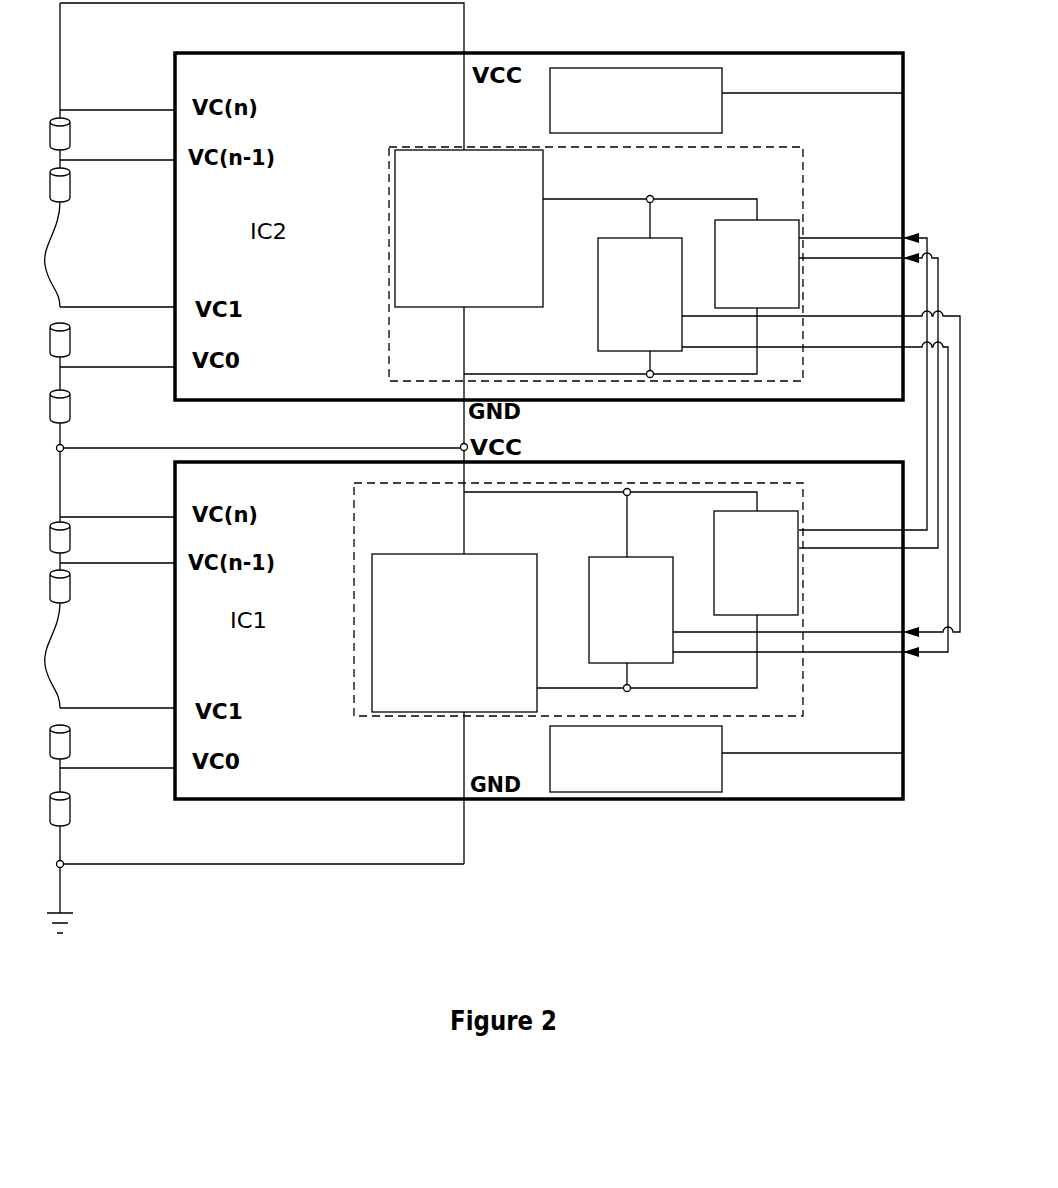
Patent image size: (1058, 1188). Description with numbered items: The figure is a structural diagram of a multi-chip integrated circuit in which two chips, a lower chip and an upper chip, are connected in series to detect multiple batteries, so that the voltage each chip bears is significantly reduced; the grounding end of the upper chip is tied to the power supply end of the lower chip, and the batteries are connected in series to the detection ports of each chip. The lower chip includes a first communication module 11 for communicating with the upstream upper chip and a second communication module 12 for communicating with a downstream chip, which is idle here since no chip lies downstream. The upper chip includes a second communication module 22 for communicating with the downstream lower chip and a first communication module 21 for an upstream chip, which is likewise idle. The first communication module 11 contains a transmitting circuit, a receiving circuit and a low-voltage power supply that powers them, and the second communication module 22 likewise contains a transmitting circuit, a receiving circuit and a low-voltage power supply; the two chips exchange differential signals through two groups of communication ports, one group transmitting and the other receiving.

The first communication module 11 is at (803, 703).
The second communication module 12 is at (722, 775).
The first communication module 21 is at (722, 103).
The second communication module 22 is at (803, 162).